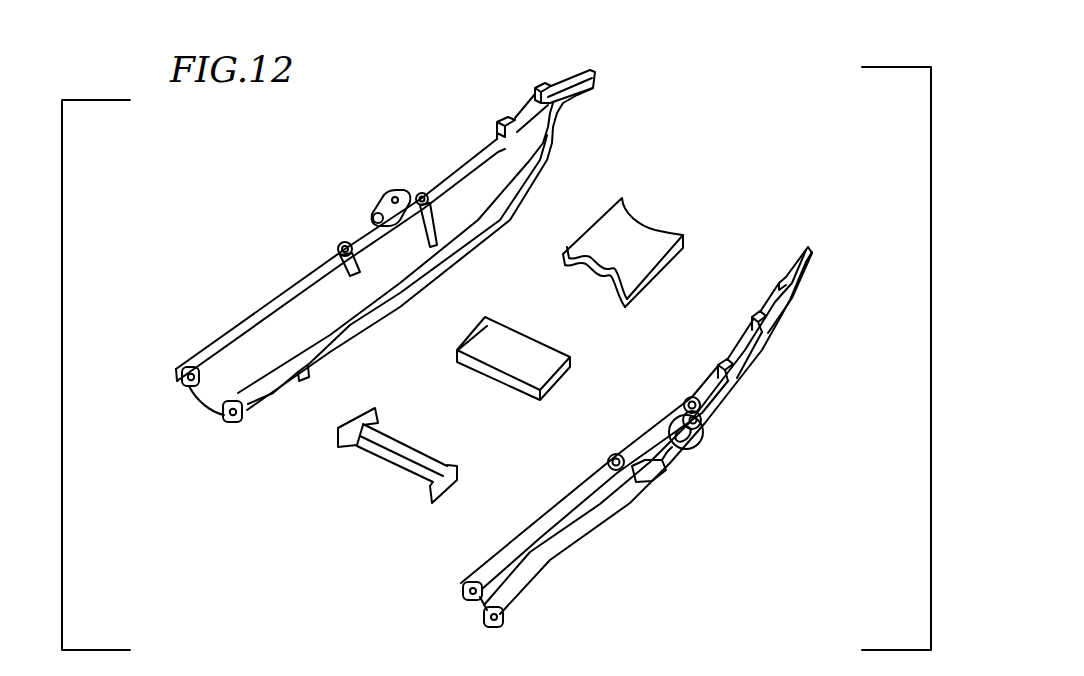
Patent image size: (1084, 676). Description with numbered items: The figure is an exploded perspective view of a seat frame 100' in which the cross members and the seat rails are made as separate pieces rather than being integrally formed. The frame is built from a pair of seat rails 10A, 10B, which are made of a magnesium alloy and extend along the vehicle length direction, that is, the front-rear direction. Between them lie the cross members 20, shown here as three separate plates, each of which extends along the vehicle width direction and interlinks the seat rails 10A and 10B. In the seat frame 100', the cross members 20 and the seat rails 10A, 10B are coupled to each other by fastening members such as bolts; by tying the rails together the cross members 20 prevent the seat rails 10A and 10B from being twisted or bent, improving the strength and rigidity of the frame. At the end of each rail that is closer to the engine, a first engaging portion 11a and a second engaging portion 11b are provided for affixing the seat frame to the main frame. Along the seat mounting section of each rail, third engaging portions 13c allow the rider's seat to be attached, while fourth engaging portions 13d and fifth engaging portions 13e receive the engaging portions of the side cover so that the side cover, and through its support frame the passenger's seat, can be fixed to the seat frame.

The seat frame 100' is at (762, 64).
The seat rail 10A is at (270, 340).
The seat rail 10B is at (567, 537).
The first engaging portion 11a is at (180, 380).
The second engaging portion 11b is at (228, 415).
The third engaging portion 13c is at (420, 193).
The fourth engaging portion 13d is at (342, 236).
The fifth engaging portion 13e is at (387, 188).
The cross member 20 is at (643, 240).